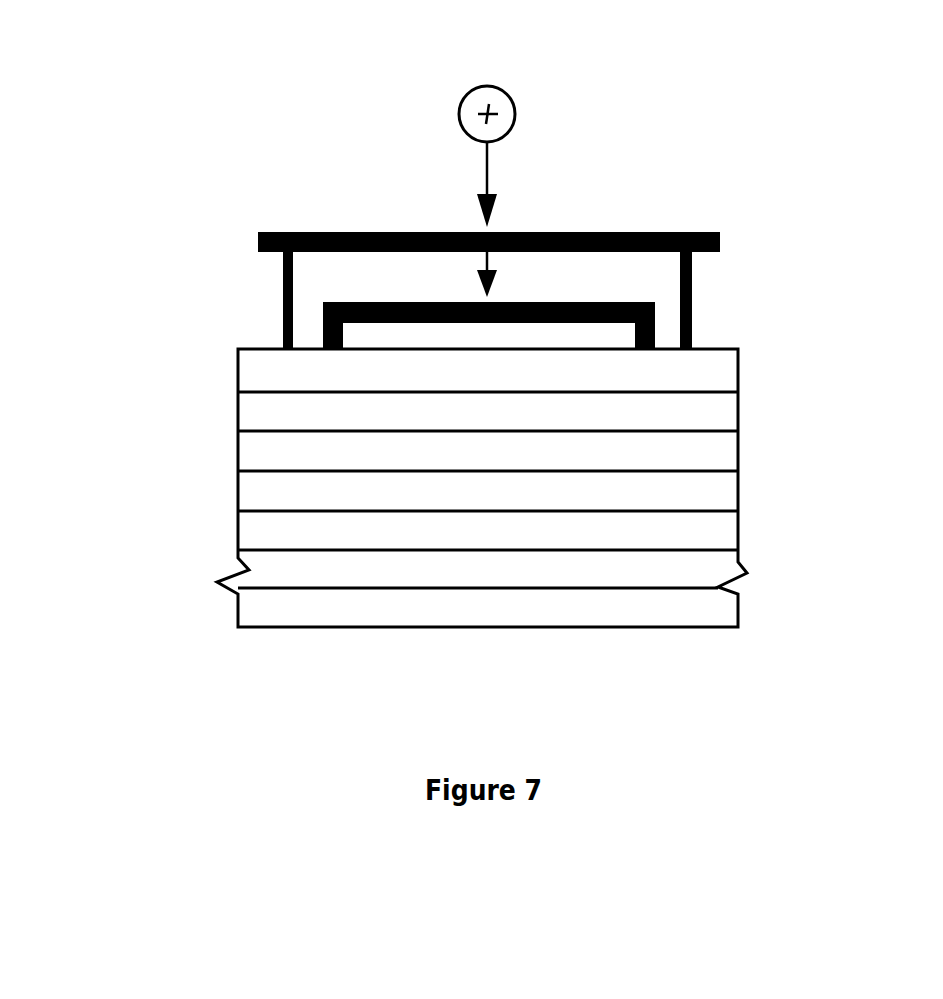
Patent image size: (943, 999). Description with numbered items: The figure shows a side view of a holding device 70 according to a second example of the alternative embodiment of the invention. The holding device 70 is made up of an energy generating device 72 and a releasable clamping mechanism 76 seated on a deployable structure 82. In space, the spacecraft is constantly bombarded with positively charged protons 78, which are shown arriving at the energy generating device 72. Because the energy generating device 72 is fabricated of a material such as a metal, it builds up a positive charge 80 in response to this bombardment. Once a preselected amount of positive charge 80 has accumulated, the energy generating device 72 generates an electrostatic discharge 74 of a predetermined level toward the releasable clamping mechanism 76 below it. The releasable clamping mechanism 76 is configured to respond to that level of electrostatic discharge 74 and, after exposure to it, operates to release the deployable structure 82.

The holding device 70 is at (152, 160).
The energy generating device 72 is at (707, 233).
The electrostatic discharge 74 is at (503, 280).
The releasable clamping mechanism 76 is at (323, 325).
The protons 78 is at (505, 90).
The positive charge 80 is at (355, 232).
The deployable structure 82 is at (705, 452).